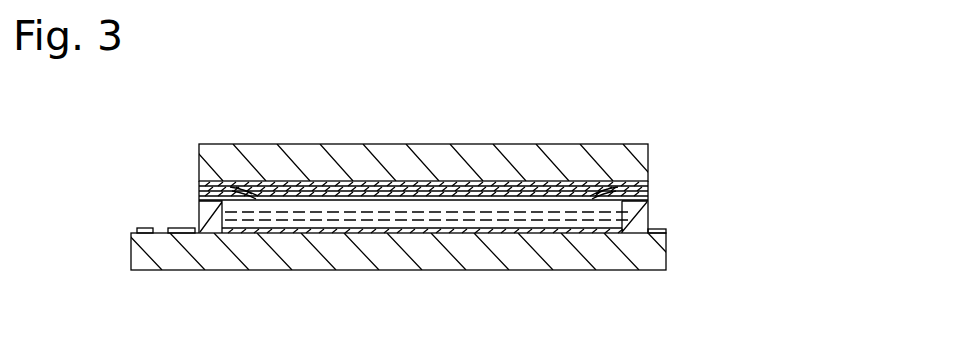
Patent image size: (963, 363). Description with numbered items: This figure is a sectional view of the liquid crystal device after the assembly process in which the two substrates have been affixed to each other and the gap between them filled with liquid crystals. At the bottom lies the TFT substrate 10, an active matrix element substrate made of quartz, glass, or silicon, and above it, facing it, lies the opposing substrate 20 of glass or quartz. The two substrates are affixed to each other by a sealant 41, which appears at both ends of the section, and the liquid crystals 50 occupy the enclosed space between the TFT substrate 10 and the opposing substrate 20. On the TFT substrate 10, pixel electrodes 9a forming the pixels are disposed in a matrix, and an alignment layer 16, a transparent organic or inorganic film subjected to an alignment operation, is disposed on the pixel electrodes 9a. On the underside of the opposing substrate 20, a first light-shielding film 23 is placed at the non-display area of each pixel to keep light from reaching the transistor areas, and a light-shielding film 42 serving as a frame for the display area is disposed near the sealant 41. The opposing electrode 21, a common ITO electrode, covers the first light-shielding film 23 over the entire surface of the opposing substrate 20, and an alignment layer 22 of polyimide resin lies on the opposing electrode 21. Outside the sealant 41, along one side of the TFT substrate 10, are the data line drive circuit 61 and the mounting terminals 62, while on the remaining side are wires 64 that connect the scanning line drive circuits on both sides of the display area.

The opposing substrate 20 is at (390, 157).
The first light-shielding film 23 is at (334, 180).
The alignment layer 22 is at (453, 192).
The opposing electrode 21 is at (525, 192).
The light-shielding film 42 is at (243, 186).
The sealant 41 is at (207, 233).
The liquid crystals 50 is at (382, 222).
The pixel electrodes 9a is at (292, 233).
The alignment layer 16 is at (572, 233).
The TFT substrate 10 is at (481, 255).
The mounting terminals 62 is at (142, 227).
The data line drive circuit 61 is at (173, 227).
The wires 64 is at (653, 233).